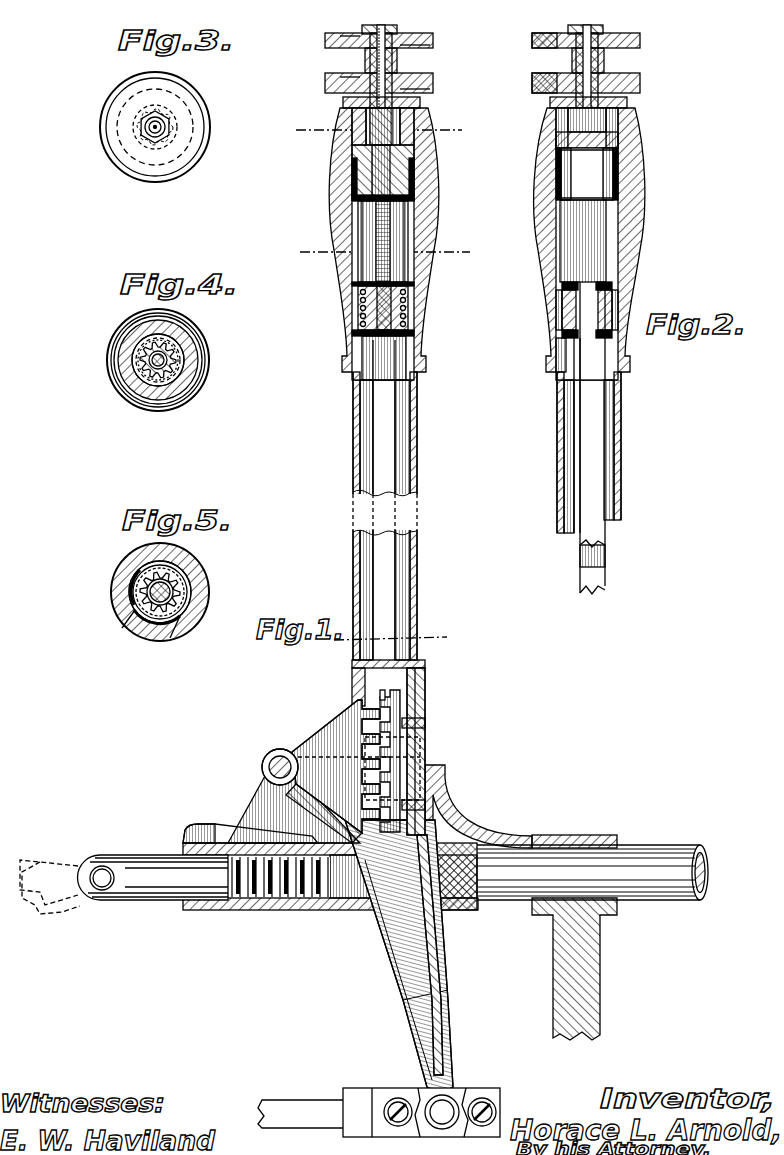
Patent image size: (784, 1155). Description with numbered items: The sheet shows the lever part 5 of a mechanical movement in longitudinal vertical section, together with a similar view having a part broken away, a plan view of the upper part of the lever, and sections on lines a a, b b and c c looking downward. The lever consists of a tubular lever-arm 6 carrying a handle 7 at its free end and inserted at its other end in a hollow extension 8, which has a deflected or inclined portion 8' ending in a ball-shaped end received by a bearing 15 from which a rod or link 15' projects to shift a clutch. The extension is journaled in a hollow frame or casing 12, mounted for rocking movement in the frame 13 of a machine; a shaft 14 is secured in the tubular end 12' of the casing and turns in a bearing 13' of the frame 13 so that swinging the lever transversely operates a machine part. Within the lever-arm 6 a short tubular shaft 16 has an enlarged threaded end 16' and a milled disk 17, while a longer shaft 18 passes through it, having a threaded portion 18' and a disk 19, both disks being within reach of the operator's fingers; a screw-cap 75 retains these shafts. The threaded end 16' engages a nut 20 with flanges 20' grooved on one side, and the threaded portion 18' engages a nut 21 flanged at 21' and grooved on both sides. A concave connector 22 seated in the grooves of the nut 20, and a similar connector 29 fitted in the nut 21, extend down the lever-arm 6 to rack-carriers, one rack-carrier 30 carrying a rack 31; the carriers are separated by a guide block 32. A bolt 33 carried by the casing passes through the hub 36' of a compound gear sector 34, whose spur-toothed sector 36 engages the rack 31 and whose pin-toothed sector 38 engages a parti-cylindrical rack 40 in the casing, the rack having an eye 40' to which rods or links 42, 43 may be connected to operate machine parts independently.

In FIG. 1, the lever part 5 is at (365, 516).
In FIG. 2, the lever part 5 is at (602, 452).
In FIG. 1, the tubular lever-arm 6 is at (417, 438).
In FIG. 2, the tubular lever-arm 6 is at (562, 485).
In FIG. 4, the tubular lever-arm 6 is at (118, 395).
In FIG. 1, the handle 7 is at (425, 220).
In FIG. 2, the handle 7 is at (632, 182).
In FIG. 4, the handle 7 is at (128, 335).
In FIG. 5, the handle 7 is at (200, 620).
In FIG. 1, the extension 8 is at (427, 871).
In FIG. 1, the deflected or inclined portion 8' is at (399, 956).
In FIG. 1, the hollow frame or casing 12 is at (431, 837).
In FIG. 1, the tubular end 12' is at (357, 829).
In FIG. 1, the frame 13 is at (579, 969).
In FIG. 1, the bearing 13' is at (574, 825).
In FIG. 1, the shaft 14 is at (660, 850).
In FIG. 1, the bearing 15 is at (421, 1101).
In FIG. 1, the rod or link 15' is at (300, 1100).
In FIG. 1, the tubular shaft 16 is at (401, 123).
In FIG. 2, the tubular shaft 16 is at (562, 129).
In FIG. 4, the tubular shaft 16 is at (114, 359).
In FIG. 1, the enlarged end 16' is at (413, 172).
In FIG. 1, the disk or wheel 17 is at (433, 80).
In FIG. 2, the disk or wheel 17 is at (640, 80).
In FIG. 1, the shaft 18 is at (399, 85).
In FIG. 2, the shaft 18 is at (620, 153).
In FIG. 3, the shaft 18 is at (118, 127).
In FIG. 4, the shaft 18 is at (109, 375).
In FIG. 5, the shaft 18 is at (189, 583).
In FIG. 1, the threaded portion 18' is at (417, 333).
In FIG. 5, the threaded portion 18' is at (111, 594).
In FIG. 1, the disk 19 is at (433, 38).
In FIG. 2, the disk 19 is at (640, 38).
In FIG. 3, the disk 19 is at (203, 112).
In FIG. 1, the nut 20 is at (411, 188).
In FIG. 2, the nut 20 is at (620, 171).
In FIG. 4, the nut 20 is at (193, 360).
In FIG. 1, the flanges 20' is at (340, 194).
In FIG. 2, the flanges 20' is at (620, 156).
In FIG. 1, the nut 21 is at (354, 308).
In FIG. 2, the nut 21 is at (561, 317).
In FIG. 5, the nut 21 is at (188, 592).
In FIG. 1, the flanges 21' is at (350, 319).
In FIG. 2, the flanges 21' is at (619, 309).
In FIG. 1, the connector 22 is at (366, 221).
In FIG. 2, the connector 22 is at (575, 238).
In FIG. 5, the connector 22 is at (170, 575).
In FIG. 1, the connector 29 is at (382, 406).
In FIG. 2, the connector 29 is at (585, 384).
In FIG. 5, the connector 29 is at (168, 640).
In FIG. 1, the rack-carrier 30 is at (425, 668).
In FIG. 1, the rack 31 is at (385, 696).
In FIG. 1, the guide block or chock 32 is at (425, 742).
In FIG. 1, the bolt 33 is at (279, 756).
In FIG. 1, the compound spur-gear and pin gear sector 34 is at (268, 780).
In FIG. 1, the spur-toothed sector 36 is at (356, 766).
In FIG. 1, the hub 36' is at (261, 767).
In FIG. 1, the crown or pin toothed sector 38 is at (300, 796).
In FIG. 1, the parti-cylindrical rack 40 is at (153, 877).
In FIG. 1, the eye 40' is at (104, 857).
In FIG. 1, the rod or link 42 is at (70, 912).
In FIG. 1, the rod or link 43 is at (55, 860).
In FIG. 1, the screw-cap 75 is at (343, 102).
In FIG. 2, the screw-cap 75 is at (550, 102).
In FIG. 1, the section line a a is at (374, 130).
In FIG. 1, the section line b b is at (384, 252).
In FIG. 1, the section line c c is at (388, 638).